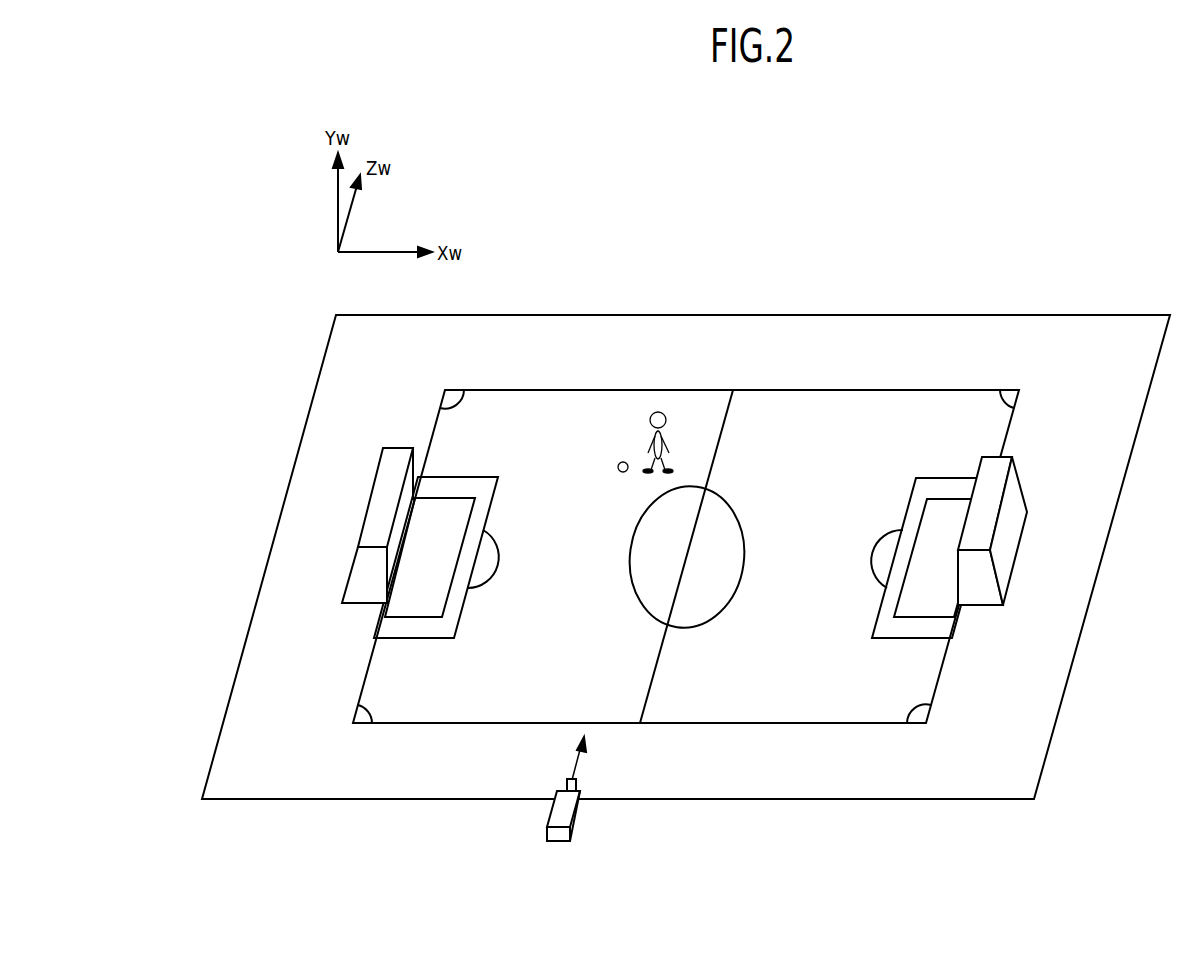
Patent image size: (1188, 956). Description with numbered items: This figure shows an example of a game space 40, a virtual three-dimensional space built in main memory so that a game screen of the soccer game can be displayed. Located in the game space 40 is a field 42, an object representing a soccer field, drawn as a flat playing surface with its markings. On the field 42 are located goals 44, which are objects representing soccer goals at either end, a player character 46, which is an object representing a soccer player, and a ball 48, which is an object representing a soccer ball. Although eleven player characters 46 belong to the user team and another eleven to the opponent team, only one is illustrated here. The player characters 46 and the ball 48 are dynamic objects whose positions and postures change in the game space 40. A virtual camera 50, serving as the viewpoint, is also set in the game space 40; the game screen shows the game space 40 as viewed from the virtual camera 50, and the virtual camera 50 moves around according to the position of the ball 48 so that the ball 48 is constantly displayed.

The game space 40 is at (656, 196).
The field 42 is at (888, 328).
The goals 44 is at (347, 580).
The player character 46 is at (658, 410).
The ball 48 is at (617, 467).
The virtual camera 50 is at (580, 815).